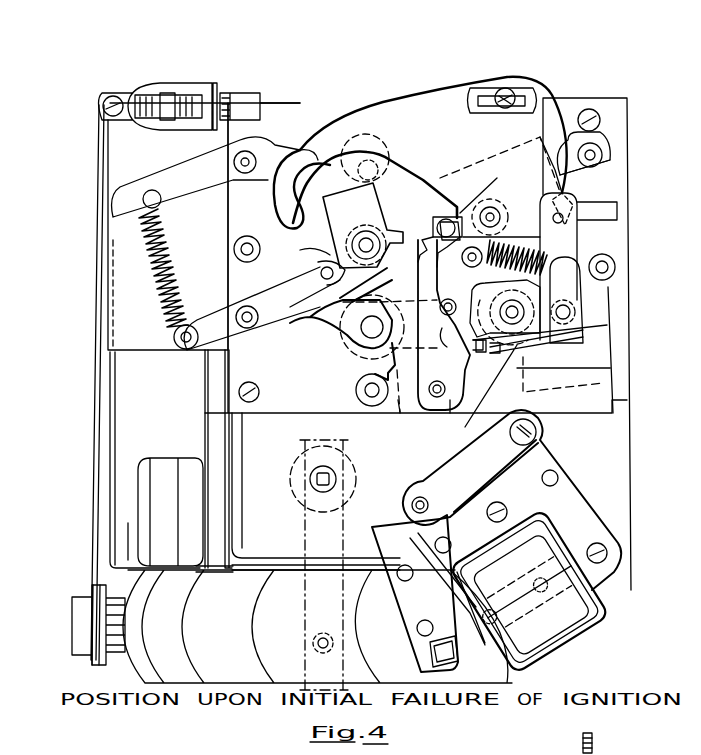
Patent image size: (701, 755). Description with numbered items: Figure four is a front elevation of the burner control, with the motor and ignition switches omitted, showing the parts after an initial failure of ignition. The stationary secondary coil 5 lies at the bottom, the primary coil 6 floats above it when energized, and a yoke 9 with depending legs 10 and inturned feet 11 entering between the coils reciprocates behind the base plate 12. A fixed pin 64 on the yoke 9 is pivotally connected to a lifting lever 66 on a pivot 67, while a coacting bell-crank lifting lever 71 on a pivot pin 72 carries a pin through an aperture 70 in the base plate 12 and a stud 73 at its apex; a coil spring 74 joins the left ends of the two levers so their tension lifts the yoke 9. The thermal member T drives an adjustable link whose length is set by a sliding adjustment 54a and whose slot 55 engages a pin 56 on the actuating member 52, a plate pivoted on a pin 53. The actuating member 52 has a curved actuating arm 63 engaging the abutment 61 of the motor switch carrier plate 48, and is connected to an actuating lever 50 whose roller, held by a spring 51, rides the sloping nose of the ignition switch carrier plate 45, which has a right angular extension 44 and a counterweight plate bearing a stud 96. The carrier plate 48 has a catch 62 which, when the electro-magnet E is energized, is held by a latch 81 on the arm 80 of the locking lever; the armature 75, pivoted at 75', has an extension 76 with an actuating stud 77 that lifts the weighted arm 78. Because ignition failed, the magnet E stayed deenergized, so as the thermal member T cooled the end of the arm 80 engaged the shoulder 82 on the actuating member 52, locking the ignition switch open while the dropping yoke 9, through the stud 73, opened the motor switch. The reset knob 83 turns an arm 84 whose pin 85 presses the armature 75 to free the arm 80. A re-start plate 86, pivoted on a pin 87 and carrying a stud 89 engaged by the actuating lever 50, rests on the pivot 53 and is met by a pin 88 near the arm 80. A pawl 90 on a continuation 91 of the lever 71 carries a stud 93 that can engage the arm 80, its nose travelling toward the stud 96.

The thermal member T is at (96, 508).
The secondary coil 5 is at (145, 667).
The primary coil 6 is at (170, 460).
The yoke 9 is at (150, 327).
The depending legs 10 is at (116, 420).
The inturned foot 11 is at (127, 534).
The base plate 12 is at (605, 423).
The right angular extension 44 is at (516, 385).
The ignition switch carrier plate 45 is at (530, 315).
The motor switch carrier plate 48 is at (345, 223).
The actuating lever 50 is at (543, 237).
The spring 51 is at (505, 253).
The actuating member 52 is at (440, 102).
The pin 53 is at (501, 217).
The sliding adjustment 54a is at (170, 100).
The slot 55 is at (521, 105).
The pin 56 is at (505, 88).
The abutment 61 is at (300, 281).
The catch 62 is at (393, 226).
The actuating arm 63 is at (277, 201).
The fixed pin 64 is at (380, 160).
The lifting lever 66 is at (269, 162).
The pivot 67 is at (240, 158).
The aperture 70 is at (385, 293).
The coacting lifting lever 71 is at (285, 322).
The pivot pin 72 is at (252, 324).
The stud 73 is at (322, 268).
The coil spring 74 is at (182, 276).
The armature 75 is at (423, 593).
The armature pivot 75' is at (392, 503).
The extension 76 is at (463, 472).
The actuating stud 77 is at (537, 432).
The weighted arm 78 is at (450, 413).
The arm 80 is at (430, 272).
The latch 81 is at (430, 252).
The shoulder 82 is at (462, 220).
The knurled knob 83 is at (358, 479).
The arm 84 is at (313, 546).
The pin 85 is at (316, 643).
The re-start plate 86 is at (580, 175).
The pin 87 is at (596, 147).
The pin 88 is at (436, 228).
The stud 89 is at (563, 192).
The pawl 90 is at (387, 360).
The pawl carrying continuation 91 is at (399, 412).
The stud 93 is at (499, 316).
The stud 96 is at (480, 348).
The electro-magnet E is at (578, 615).